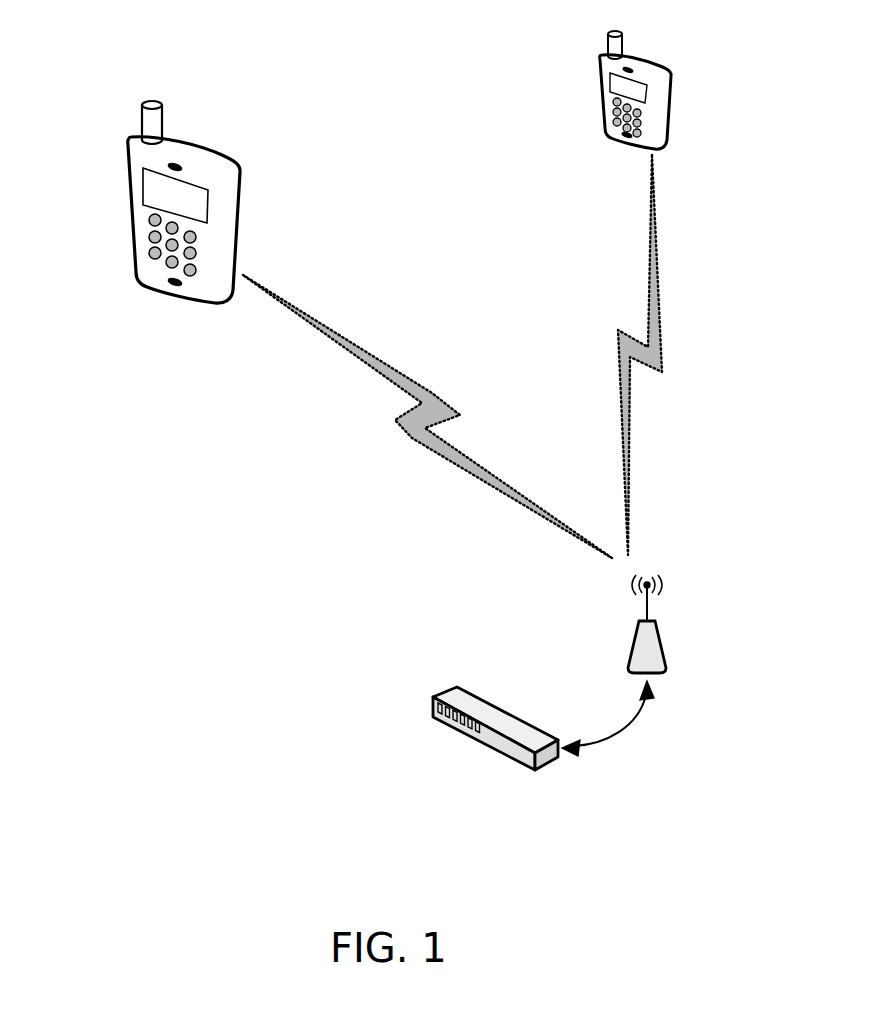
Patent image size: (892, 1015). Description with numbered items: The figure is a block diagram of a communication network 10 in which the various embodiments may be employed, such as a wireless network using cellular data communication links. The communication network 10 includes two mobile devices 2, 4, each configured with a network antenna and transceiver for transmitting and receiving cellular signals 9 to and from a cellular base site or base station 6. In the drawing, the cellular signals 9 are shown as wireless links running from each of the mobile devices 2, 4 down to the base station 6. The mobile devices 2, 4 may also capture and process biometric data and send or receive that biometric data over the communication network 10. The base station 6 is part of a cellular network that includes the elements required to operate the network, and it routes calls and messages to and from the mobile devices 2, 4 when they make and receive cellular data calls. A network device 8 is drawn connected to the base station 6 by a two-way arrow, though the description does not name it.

The communication network 10 is at (287, 88).
The mobile device 2 is at (670, 72).
The mobile device 4 is at (127, 190).
The base station 6 is at (653, 615).
The network device (router) 8 is at (497, 713).
The cellular signals 9 is at (421, 395).